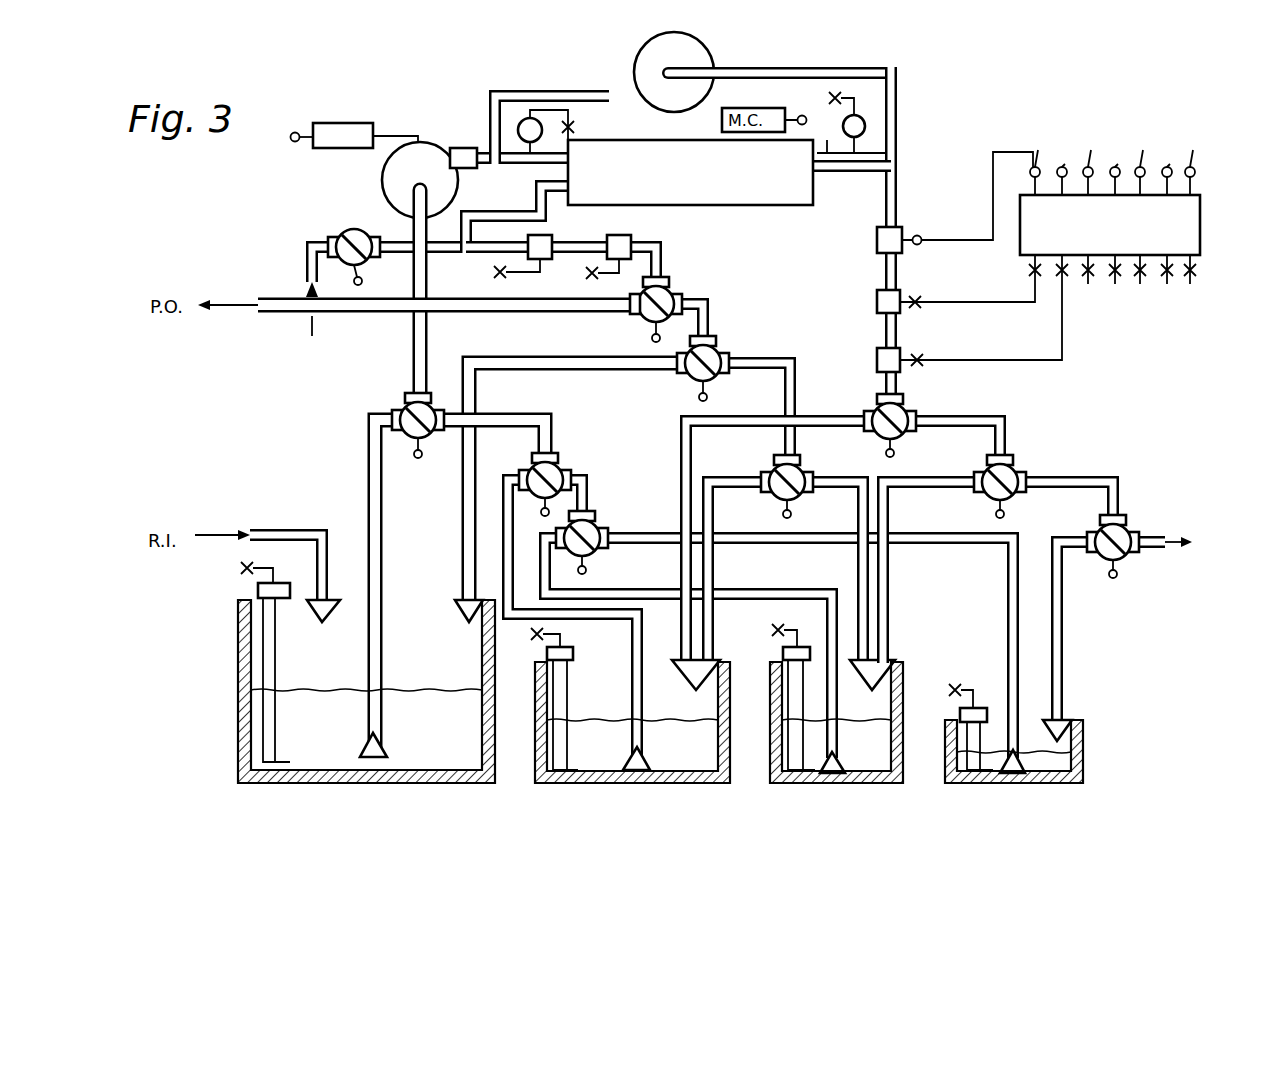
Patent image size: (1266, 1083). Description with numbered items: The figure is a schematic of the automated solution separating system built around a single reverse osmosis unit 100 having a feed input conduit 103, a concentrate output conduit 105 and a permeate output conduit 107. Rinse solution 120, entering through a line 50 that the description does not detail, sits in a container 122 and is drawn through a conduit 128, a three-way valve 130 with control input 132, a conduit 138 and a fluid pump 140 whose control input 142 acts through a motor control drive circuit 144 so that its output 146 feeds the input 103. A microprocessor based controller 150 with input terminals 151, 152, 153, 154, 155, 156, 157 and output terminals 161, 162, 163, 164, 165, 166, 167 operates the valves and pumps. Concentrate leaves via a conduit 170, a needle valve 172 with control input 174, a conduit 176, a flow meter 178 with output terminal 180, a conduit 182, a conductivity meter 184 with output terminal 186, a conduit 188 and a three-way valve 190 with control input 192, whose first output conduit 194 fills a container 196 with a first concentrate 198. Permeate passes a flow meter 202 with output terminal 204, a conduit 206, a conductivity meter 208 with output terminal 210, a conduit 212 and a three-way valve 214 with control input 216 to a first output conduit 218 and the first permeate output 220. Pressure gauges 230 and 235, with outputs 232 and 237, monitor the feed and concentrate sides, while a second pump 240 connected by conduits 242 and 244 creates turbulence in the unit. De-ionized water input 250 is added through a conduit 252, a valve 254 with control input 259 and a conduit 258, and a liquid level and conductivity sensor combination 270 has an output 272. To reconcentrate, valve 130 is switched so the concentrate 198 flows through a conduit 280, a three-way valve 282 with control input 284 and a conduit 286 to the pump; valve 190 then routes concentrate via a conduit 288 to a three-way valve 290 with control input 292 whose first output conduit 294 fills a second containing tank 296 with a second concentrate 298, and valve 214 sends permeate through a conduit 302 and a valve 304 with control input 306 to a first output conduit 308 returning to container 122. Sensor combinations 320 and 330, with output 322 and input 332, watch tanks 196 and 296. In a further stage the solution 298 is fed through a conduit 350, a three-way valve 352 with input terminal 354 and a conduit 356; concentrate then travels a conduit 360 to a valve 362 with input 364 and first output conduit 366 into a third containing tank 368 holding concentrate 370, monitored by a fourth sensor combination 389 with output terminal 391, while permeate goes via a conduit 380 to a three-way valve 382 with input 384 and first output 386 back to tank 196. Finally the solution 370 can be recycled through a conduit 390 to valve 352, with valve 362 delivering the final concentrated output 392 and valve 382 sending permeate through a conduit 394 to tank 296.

The raw water inlet pipe 50 is at (292, 528).
The reverse osmosis unit 100 is at (690, 206).
The feed input conduit 103 is at (522, 168).
The concentrate output conduit 105 is at (817, 135).
The permeate output conduit 107 is at (537, 201).
The solution 120 is at (452, 732).
The container 122 is at (237, 723).
The conduit 128 is at (384, 548).
The three-way valve 130 is at (405, 407).
The control input 132 is at (423, 457).
The conduit 138 is at (412, 330).
The fluid pump 140 is at (390, 194).
The control input 142 is at (296, 132).
The motor control drive circuit 144 is at (343, 123).
The output 146 is at (460, 146).
The microprocessor based controller 150 is at (1202, 230).
The input terminal 151 is at (1026, 276).
The input terminal 152 is at (1058, 284).
The input terminal 153 is at (1090, 283).
The input terminal 154 is at (1114, 290).
The input terminal 155 is at (1151, 283).
The input terminal 156 is at (1166, 290).
The input terminal 157 is at (1194, 283).
The output terminal 161 is at (1034, 160).
The output terminal 162 is at (1059, 170).
The output terminal 163 is at (1084, 158).
The output terminal 164 is at (1110, 170).
The output terminal 165 is at (1149, 157).
The output terminal 166 is at (1169, 170).
The output terminal 167 is at (1202, 158).
The conduit 170 is at (899, 160).
The needle valve 172 is at (903, 232).
The control input 174 is at (920, 246).
The conduit 176 is at (880, 276).
The flow meter 178 is at (877, 322).
The output terminal 180 is at (930, 306).
The conduit 182 is at (899, 335).
The conductivity meter 184 is at (877, 364).
The output terminal 186 is at (925, 366).
The conduit 188 is at (880, 386).
The three-way valve 190 is at (906, 410).
The control input 192 is at (895, 453).
The first output conduit 194 is at (726, 412).
The container 196 is at (688, 785).
The first concentrate 198 is at (697, 750).
The flow meter 202 is at (520, 248).
The output terminal 204 is at (494, 276).
The conduit 206 is at (560, 240).
The conductivity meter 208 is at (624, 239).
The output terminal 210 is at (584, 278).
The conduit 212 is at (664, 254).
The three-way valve 214 is at (636, 318).
The control input 216 is at (651, 339).
The first output conduit 218 is at (490, 314).
The first permeate output 220 is at (308, 262).
The pressure gauge 230 is at (518, 124).
The output 232 is at (575, 127).
The pressure gauge 235 is at (866, 120).
The output 237 is at (826, 97).
The second pump 240 is at (704, 63).
The conduit 242 is at (812, 67).
The conduit 244 is at (546, 90).
The de-ionized water input 250 is at (310, 330).
The conduit 252 is at (306, 257).
The valve 254 is at (343, 233).
The conduit 258 is at (422, 231).
The control input 259 is at (376, 279).
The liquid level and conductivity sensor combination 270 is at (278, 652).
The output 272 is at (240, 570).
The conduit 280 is at (588, 622).
The three-way valve 282 is at (555, 463).
The control input 284 is at (541, 512).
The conduit 286 is at (498, 413).
The conduit 288 is at (975, 420).
The three-way valve 290 is at (1018, 474).
The control input 292 is at (1005, 513).
The first output conduit 294 is at (910, 490).
The second containing tank 296 is at (855, 786).
The second concentrate 298 is at (887, 752).
The conduit 302 is at (680, 300).
The valve 304 is at (690, 378).
The control input 306 is at (698, 398).
The first output conduit 308 is at (585, 370).
The second liquid level conductivity sensor combination 320 is at (568, 696).
The output 322 is at (532, 638).
The third liquid level conductivity sensor combination 330 is at (790, 700).
The input 332 is at (770, 628).
The conduit 350 is at (726, 588).
The three-way valve 352 is at (596, 527).
The input terminal 354 is at (588, 572).
The conduit 356 is at (590, 478).
The conduit 360 is at (1086, 477).
The valve 362 is at (1128, 532).
The input 364 is at (1117, 578).
The first output conduit 366 is at (1065, 623).
The third containing tank 368 is at (1085, 760).
The yet more highly concentrated solution 370 is at (1040, 784).
The conduit 380 is at (772, 357).
The three-way valve 382 is at (802, 470).
The input 384 is at (792, 518).
The first output 386 is at (740, 460).
The fourth liquid level conductivity sensor combination 389 is at (950, 738).
The conduit 390 is at (930, 550).
The output terminal 391 is at (957, 683).
The final concentrated output 392 is at (1180, 540).
The conduit 394 is at (856, 568).